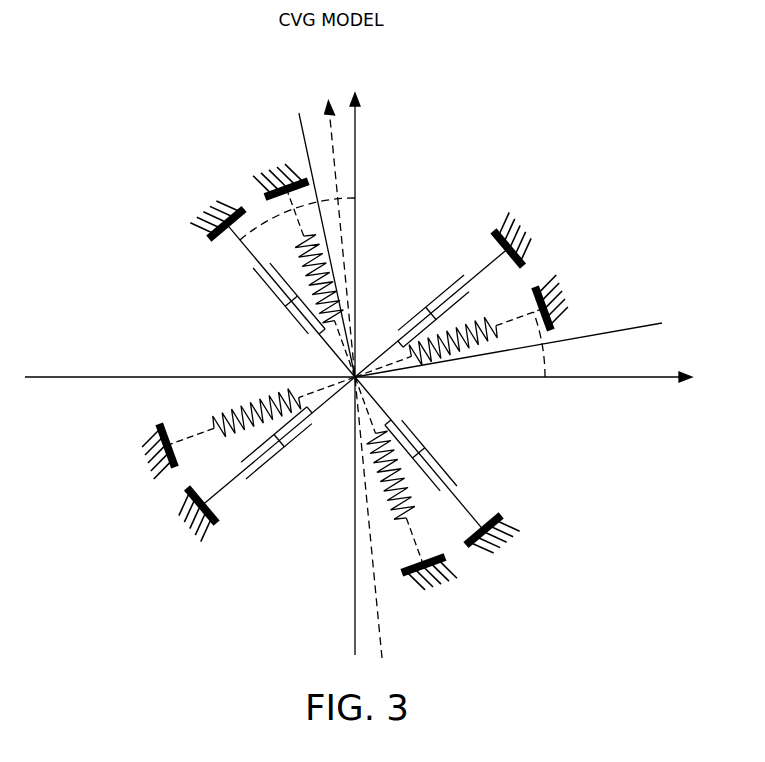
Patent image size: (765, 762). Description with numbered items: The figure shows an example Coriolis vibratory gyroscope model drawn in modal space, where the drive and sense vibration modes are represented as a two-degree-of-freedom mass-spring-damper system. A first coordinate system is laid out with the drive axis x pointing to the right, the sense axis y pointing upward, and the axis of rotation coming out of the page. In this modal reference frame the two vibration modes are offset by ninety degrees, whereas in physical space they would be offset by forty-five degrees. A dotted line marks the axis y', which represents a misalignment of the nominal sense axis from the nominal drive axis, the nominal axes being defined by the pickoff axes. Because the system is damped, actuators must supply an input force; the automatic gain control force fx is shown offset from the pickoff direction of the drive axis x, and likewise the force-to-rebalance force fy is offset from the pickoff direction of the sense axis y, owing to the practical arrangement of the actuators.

The AGC force fx is at (517, 345).
The FTR force fy is at (320, 231).
The x-axis x is at (366, 378).
The y-axis y is at (362, 374).
The misaligned sense axis y' is at (350, 362).